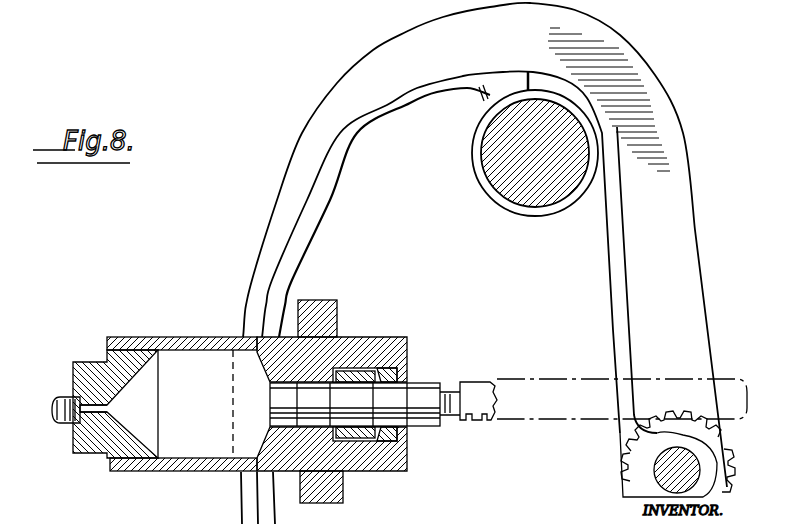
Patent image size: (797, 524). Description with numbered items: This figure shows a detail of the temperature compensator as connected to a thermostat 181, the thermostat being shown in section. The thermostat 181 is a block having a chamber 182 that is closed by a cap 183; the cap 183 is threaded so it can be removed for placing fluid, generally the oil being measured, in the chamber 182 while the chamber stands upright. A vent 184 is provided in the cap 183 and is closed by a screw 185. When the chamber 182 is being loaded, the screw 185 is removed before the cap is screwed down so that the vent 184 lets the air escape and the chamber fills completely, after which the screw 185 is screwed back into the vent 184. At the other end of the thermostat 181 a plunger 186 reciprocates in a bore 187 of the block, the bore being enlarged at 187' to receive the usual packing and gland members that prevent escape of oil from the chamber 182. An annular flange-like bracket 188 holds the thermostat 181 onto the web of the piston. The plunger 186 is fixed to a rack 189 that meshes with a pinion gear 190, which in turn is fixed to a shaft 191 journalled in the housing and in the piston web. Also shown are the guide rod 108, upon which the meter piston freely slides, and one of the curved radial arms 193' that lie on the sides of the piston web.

The curved radial arm 193' is at (484, 263).
The guide rod 108 is at (503, 175).
The thermostat 181 is at (206, 346).
The chamber 182 is at (203, 445).
The cap 183 is at (90, 361).
The vent 184 is at (93, 409).
The screw 185 is at (53, 402).
The plunger 186 is at (426, 427).
The bore 187 is at (358, 440).
The enlarged portion of bore 187' is at (422, 430).
The annular flange-like bracket 188 is at (333, 313).
The rack 189 is at (499, 359).
The pinion gear 190 is at (762, 440).
The shaft 191 is at (663, 480).